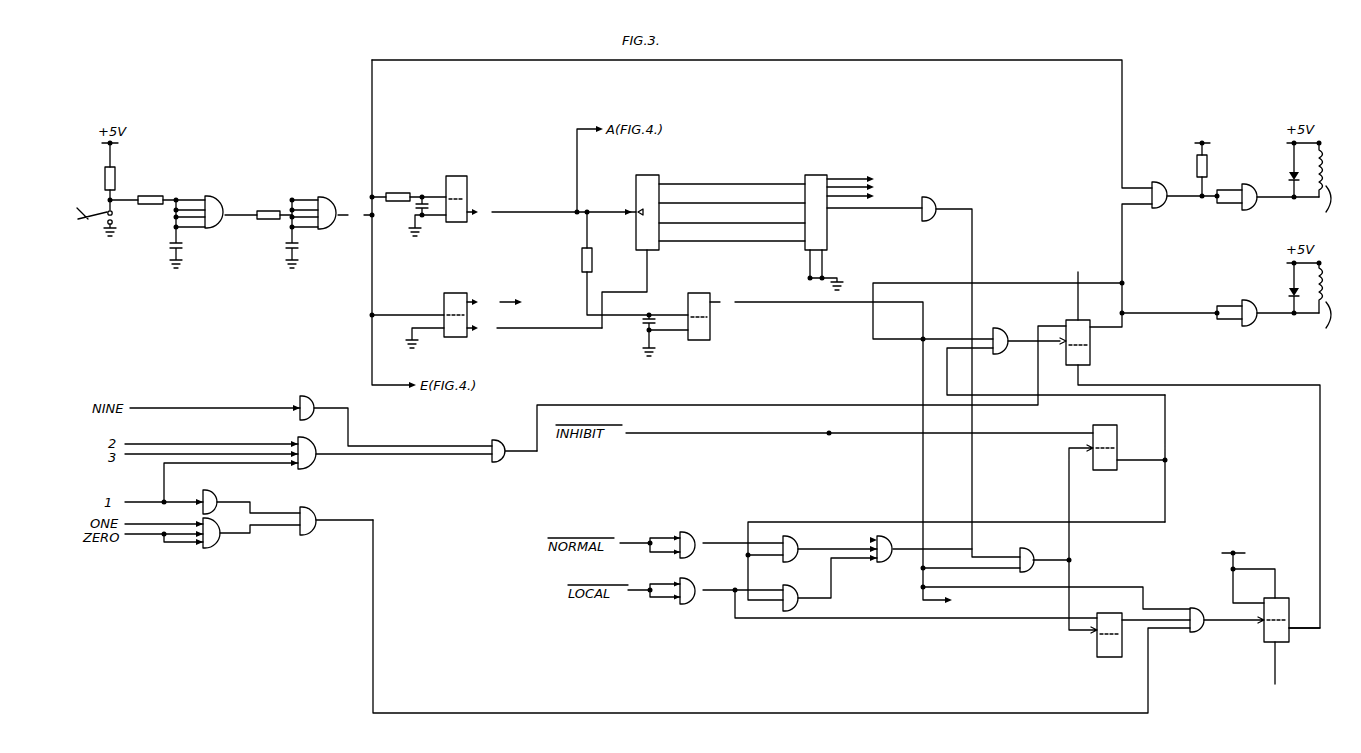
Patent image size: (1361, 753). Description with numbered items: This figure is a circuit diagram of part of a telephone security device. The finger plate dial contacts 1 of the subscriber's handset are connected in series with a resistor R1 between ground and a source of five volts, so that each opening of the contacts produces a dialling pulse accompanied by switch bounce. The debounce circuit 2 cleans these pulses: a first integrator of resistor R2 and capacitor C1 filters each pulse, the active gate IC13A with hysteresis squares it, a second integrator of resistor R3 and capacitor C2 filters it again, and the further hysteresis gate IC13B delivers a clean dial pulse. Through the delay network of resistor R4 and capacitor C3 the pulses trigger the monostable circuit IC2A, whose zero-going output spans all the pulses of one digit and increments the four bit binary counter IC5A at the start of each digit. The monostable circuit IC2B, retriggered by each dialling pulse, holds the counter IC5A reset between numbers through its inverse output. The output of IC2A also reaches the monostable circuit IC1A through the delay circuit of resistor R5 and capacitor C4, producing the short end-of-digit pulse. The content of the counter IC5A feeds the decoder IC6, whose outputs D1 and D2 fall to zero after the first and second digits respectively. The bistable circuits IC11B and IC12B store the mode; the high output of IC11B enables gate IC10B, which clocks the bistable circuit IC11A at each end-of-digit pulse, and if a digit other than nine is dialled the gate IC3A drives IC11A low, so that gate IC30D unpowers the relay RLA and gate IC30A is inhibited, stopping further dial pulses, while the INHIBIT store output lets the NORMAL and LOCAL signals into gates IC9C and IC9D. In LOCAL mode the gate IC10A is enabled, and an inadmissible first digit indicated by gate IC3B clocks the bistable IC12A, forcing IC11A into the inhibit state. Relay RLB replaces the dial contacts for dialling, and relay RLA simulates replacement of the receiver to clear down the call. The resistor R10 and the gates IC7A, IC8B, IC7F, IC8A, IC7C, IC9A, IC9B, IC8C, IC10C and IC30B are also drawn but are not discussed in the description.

The finger plate dial contacts 1 is at (95, 210).
The debounce circuit 2 is at (346, 183).
The resistor R1 is at (118, 173).
The resistor R2 is at (152, 206).
The resistor R3 is at (268, 219).
The resistor R4 is at (396, 192).
The resistor R5 is at (581, 259).
The resistor R10 is at (1198, 160).
The capacitor C1 is at (182, 246).
The capacitor C2 is at (298, 246).
The capacitor C3 is at (416, 206).
The capacitor C4 is at (645, 327).
The decoder output signal D1 is at (1290, 289).
The decoder output signal D2 is at (1290, 172).
The relay RLA is at (1317, 304).
The relay RLB is at (1318, 186).
The active And gate IC13A is at (233, 240).
The active gate IC13B is at (343, 240).
The monostable circuit IC2A is at (464, 189).
The monostable circuit IC2B is at (487, 310).
The four bit binary counter IC5A is at (703, 242).
The decoder IC6 is at (863, 223).
The monostable circuit IC1A is at (850, 441).
The inverter IC7C is at (912, 233).
The gate IC10B is at (1012, 364).
The bistable circuit IC11A is at (1193, 442).
The gate IC30A is at (1158, 224).
The driver gate IC30B is at (1230, 228).
The gate IC30D is at (1256, 344).
The inverter IC7A is at (324, 396).
The OR gate IC8B is at (320, 470).
The inverter IC7F is at (229, 492).
The OR gate IC8A is at (236, 556).
The gate IC3B is at (310, 546).
The gate IC3A is at (486, 476).
The inverter IC9B is at (715, 536).
The inverter IC9A is at (716, 602).
The gate IC9C is at (806, 550).
The gate IC9D is at (806, 608).
The OR gate IC8C is at (898, 534).
The NAND gate IC10C is at (1040, 568).
The bistable circuit IC11B is at (1118, 514).
The gate IC10A is at (1210, 642).
The bistable circuit IC12A is at (1273, 619).
The bistable circuit IC12B is at (1139, 646).